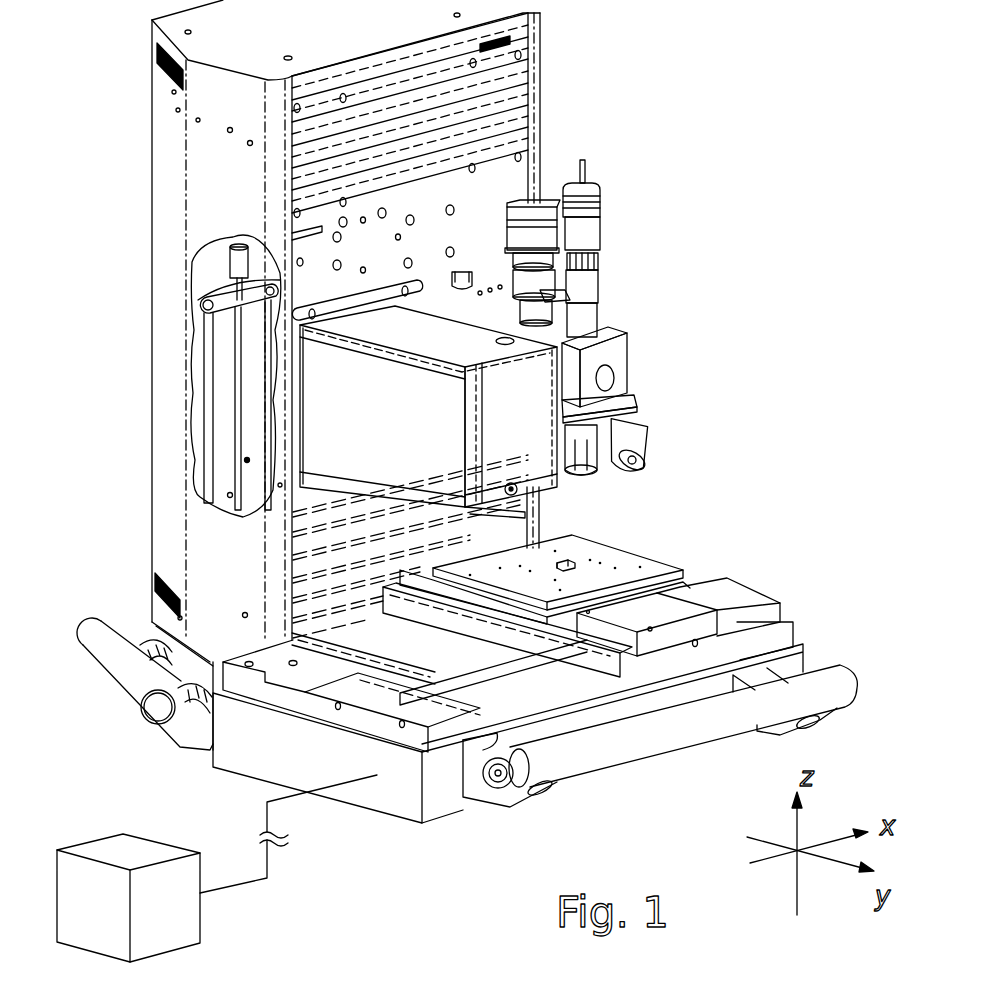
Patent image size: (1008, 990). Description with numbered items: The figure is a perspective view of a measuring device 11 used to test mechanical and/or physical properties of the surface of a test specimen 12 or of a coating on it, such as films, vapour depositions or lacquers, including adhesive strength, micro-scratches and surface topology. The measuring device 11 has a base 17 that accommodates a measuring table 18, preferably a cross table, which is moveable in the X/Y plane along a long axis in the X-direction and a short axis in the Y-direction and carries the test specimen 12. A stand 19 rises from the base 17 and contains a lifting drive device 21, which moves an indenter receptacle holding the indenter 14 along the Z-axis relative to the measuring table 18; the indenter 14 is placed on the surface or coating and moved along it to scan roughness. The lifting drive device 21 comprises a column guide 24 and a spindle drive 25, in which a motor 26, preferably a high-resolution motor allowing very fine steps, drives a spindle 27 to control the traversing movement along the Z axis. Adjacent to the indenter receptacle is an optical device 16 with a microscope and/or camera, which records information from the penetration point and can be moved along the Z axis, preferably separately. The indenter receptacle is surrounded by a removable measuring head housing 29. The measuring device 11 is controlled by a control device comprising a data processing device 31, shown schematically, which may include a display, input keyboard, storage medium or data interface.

The measuring device 11 is at (752, 358).
The test specimen 12 is at (572, 562).
The indenter 14 is at (541, 511).
The optical device 16 is at (655, 207).
The base 17 is at (252, 753).
The measuring table 18 is at (727, 563).
The stand 19 is at (130, 473).
The lifting drive device 21 is at (170, 270).
The column guide 24 is at (194, 340).
The spindle drive 25 is at (210, 258).
The motor 26 is at (240, 260).
The spindle 27 is at (220, 286).
The measuring head housing 29 is at (401, 425).
The data processing device 31 is at (112, 918).